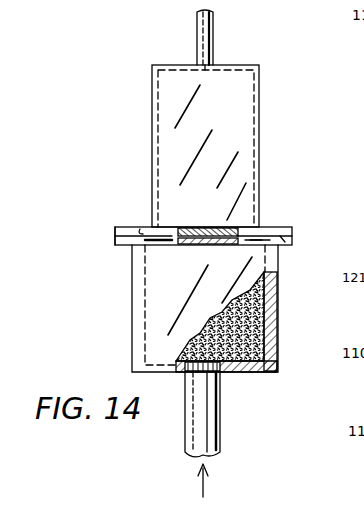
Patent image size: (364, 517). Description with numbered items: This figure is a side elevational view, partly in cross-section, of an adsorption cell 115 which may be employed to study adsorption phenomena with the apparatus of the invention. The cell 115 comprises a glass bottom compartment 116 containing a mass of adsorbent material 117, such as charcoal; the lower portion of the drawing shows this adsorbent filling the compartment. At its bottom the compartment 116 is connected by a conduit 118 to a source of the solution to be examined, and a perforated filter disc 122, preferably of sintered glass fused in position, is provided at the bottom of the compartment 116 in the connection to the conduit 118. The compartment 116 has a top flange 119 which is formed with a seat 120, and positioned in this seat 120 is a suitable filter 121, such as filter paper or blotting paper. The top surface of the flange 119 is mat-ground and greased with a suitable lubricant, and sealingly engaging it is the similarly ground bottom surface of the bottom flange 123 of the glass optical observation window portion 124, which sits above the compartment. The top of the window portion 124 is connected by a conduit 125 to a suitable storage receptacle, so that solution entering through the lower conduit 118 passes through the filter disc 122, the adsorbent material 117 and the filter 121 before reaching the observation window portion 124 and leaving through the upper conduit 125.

The adsorption cell 115 is at (268, 203).
The glass bottom compartment 116 is at (277, 302).
The mass of adsorbent material 117 is at (277, 336).
The conduit 118 is at (210, 421).
The top flange 119 is at (287, 238).
The seat 120 is at (260, 235).
The filter 121 is at (203, 226).
The perforated filter disc 122 is at (224, 373).
The bottom flange 123 is at (122, 230).
The glass optical observation window portion 124 is at (255, 121).
The conduit 125 is at (215, 36).